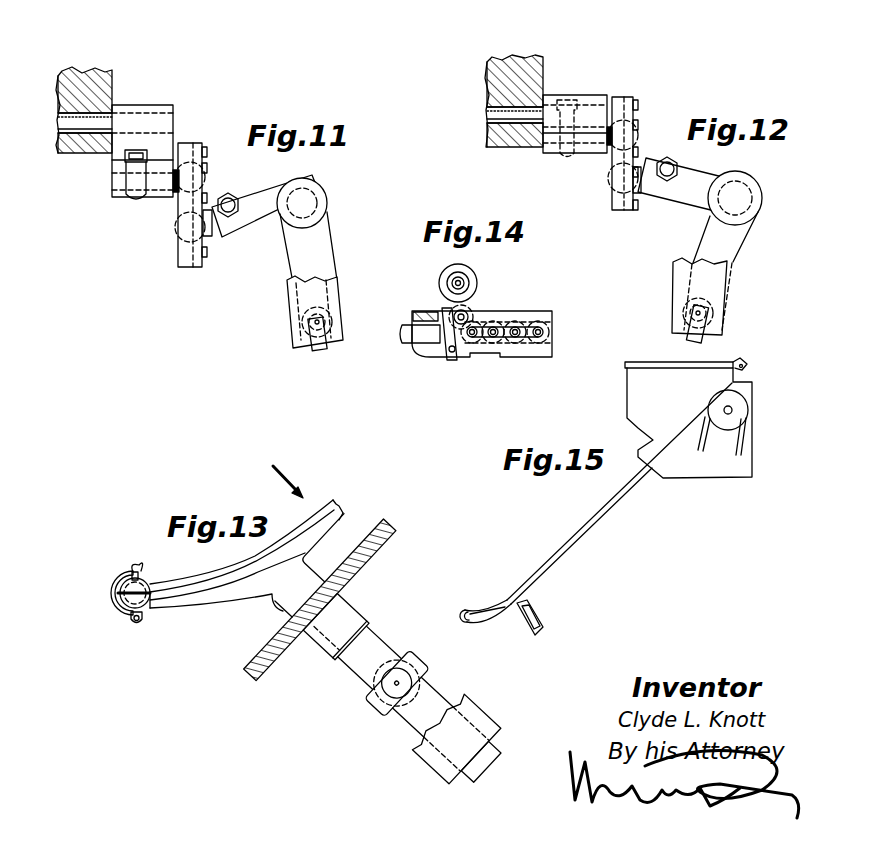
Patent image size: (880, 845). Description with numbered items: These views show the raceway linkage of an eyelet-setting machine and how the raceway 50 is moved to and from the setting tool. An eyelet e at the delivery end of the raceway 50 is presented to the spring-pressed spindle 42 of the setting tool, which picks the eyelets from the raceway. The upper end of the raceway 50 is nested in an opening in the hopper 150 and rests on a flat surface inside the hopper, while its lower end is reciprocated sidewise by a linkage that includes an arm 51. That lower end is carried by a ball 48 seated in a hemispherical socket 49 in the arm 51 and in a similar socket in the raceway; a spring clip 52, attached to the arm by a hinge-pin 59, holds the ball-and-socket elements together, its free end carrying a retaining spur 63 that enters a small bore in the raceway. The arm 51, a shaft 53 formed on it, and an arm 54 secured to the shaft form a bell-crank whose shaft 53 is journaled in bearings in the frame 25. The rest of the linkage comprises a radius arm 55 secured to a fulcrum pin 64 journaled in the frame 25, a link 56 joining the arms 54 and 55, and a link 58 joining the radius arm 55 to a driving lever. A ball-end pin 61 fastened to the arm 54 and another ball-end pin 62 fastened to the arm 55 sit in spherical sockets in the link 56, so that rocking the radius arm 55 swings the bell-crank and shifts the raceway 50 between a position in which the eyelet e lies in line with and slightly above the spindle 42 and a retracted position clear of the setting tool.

In FIG. 11, the frame 25 is at (86, 70).
In FIG. 12, the frame 25 is at (507, 62).
In FIG. 13, the frame 25 is at (372, 553).
In FIG. 11, the fulcrum pin 64 is at (58, 132).
In FIG. 12, the fulcrum pin 64 is at (488, 112).
In FIG. 11, the radius arm 55 is at (127, 110).
In FIG. 12, the radius arm 55 is at (592, 100).
In FIG. 11, the link 58 is at (137, 197).
In FIG. 12, the link 58 is at (567, 102).
In FIG. 11, the link 56 is at (188, 262).
In FIG. 12, the link 56 is at (622, 102).
In FIG. 13, the link 56 is at (415, 657).
In FIG. 11, the ball-end pin 62 is at (205, 180).
In FIG. 12, the ball-end pin 62 is at (633, 130).
In FIG. 11, the ball-end pin 61 is at (180, 217).
In FIG. 12, the ball-end pin 61 is at (607, 180).
In FIG. 11, the arm 54 is at (250, 223).
In FIG. 12, the arm 54 is at (670, 192).
In FIG. 13, the arm 54 is at (378, 693).
In FIG. 11, the shaft 53 is at (317, 202).
In FIG. 12, the shaft 53 is at (735, 198).
In FIG. 15, the shaft 53 is at (533, 617).
In FIG. 13, the shaft 53 is at (457, 730).
In FIG. 11, the arm 51 is at (325, 243).
In FIG. 12, the arm 51 is at (745, 230).
In FIG. 15, the arm 51 is at (500, 625).
In FIG. 13, the arm 51 is at (208, 610).
In FIG. 11, the raceway 50 is at (337, 297).
In FIG. 12, the raceway 50 is at (727, 298).
In FIG. 14, the raceway 50 is at (527, 350).
In FIG. 15, the raceway 50 is at (600, 520).
In FIG. 13, the raceway 50 is at (330, 512).
In FIG. 14, the spring-pressed spindle 42 is at (462, 283).
In FIG. 14, the eyelet e is at (469, 312).
In FIG. 15, the hopper 150 is at (688, 418).
In FIG. 13, the spring clip 52 is at (115, 610).
In FIG. 13, the hinge-pin 59 is at (137, 624).
In FIG. 13, the hemispherical socket 49 is at (149, 612).
In FIG. 13, the ball 48 is at (160, 590).
In FIG. 13, the retaining spur 63 is at (136, 578).